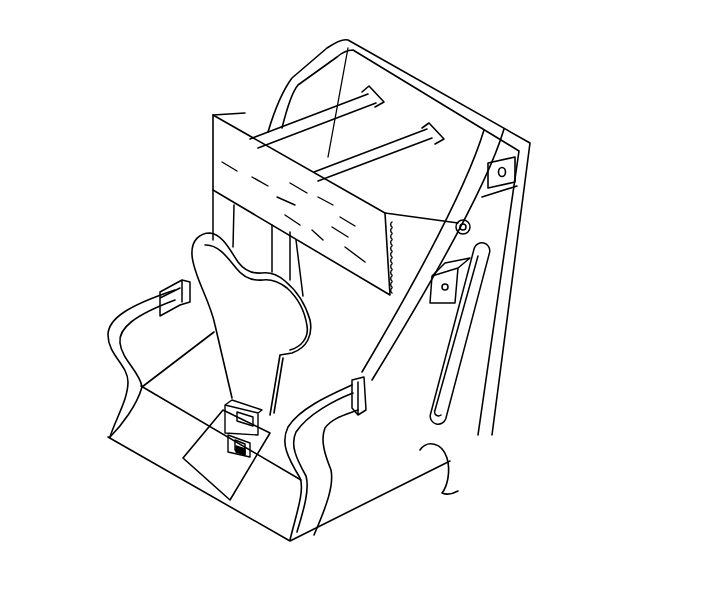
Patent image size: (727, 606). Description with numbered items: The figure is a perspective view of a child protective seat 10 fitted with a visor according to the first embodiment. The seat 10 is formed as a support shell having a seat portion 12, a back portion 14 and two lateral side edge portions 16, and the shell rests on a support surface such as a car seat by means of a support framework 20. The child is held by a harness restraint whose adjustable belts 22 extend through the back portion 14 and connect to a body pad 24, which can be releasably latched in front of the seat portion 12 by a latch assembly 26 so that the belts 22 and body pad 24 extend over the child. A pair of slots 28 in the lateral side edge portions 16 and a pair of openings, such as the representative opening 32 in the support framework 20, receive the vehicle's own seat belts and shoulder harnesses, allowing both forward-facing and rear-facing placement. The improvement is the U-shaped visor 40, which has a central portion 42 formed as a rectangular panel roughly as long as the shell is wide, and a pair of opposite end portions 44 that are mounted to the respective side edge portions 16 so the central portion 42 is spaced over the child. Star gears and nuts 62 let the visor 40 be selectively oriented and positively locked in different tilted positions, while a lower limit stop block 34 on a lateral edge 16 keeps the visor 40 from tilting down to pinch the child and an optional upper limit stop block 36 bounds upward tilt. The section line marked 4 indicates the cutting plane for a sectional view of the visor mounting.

The section line 4- 4 is at (202, 148).
The protective seat 10 is at (110, 188).
The seat portion 12 is at (190, 393).
The back portion 14 is at (361, 78).
The lateral side edge portions 16 is at (190, 335).
The support framework 20 is at (340, 503).
The belts 22 is at (373, 95).
The body pad 24 is at (192, 268).
The latch assembly 26 is at (207, 467).
The slots 28 is at (158, 291).
The opening 32 is at (478, 359).
The block 34 is at (447, 287).
The block 36 is at (530, 157).
The visor 40 is at (205, 177).
The central portion 42 is at (253, 200).
The end portions 44 is at (240, 123).
The nuts 62 is at (472, 220).